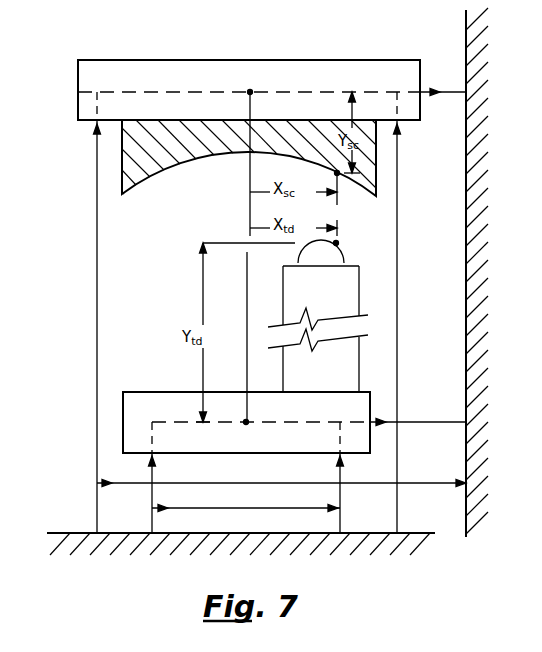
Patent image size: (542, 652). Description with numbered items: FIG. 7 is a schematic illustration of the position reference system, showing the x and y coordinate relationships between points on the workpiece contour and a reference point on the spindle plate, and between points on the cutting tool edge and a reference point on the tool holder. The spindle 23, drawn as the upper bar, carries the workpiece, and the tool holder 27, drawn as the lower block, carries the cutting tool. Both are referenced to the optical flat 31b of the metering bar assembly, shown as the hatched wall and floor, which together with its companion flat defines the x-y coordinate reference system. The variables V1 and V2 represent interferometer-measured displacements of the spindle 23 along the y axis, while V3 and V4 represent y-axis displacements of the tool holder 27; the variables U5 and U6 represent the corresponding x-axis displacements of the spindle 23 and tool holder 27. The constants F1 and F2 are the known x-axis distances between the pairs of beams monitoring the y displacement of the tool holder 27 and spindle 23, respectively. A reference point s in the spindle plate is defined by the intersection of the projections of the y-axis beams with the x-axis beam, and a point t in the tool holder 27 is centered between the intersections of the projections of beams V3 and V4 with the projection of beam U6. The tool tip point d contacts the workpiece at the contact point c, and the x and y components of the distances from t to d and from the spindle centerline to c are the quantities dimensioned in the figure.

The spindle 23 is at (328, 60).
The tool holder 27 is at (177, 392).
The optical flat 31b is at (466, 193).
The reference point s is at (251, 91).
The point of contact c is at (338, 175).
The point on the tool tip d is at (338, 243).
The point in the tool holder t is at (249, 421).
The x axis displacement variable U5 is at (445, 91).
The x axis displacement variable U6 is at (428, 421).
The y axis displacement variable V1 is at (97, 383).
The y axis displacement variable V2 is at (397, 371).
The y axis displacement variable V3 is at (150, 492).
The y axis displacement variable V4 is at (342, 500).
The constant F1 is at (246, 499).
The constant F2 is at (281, 473).